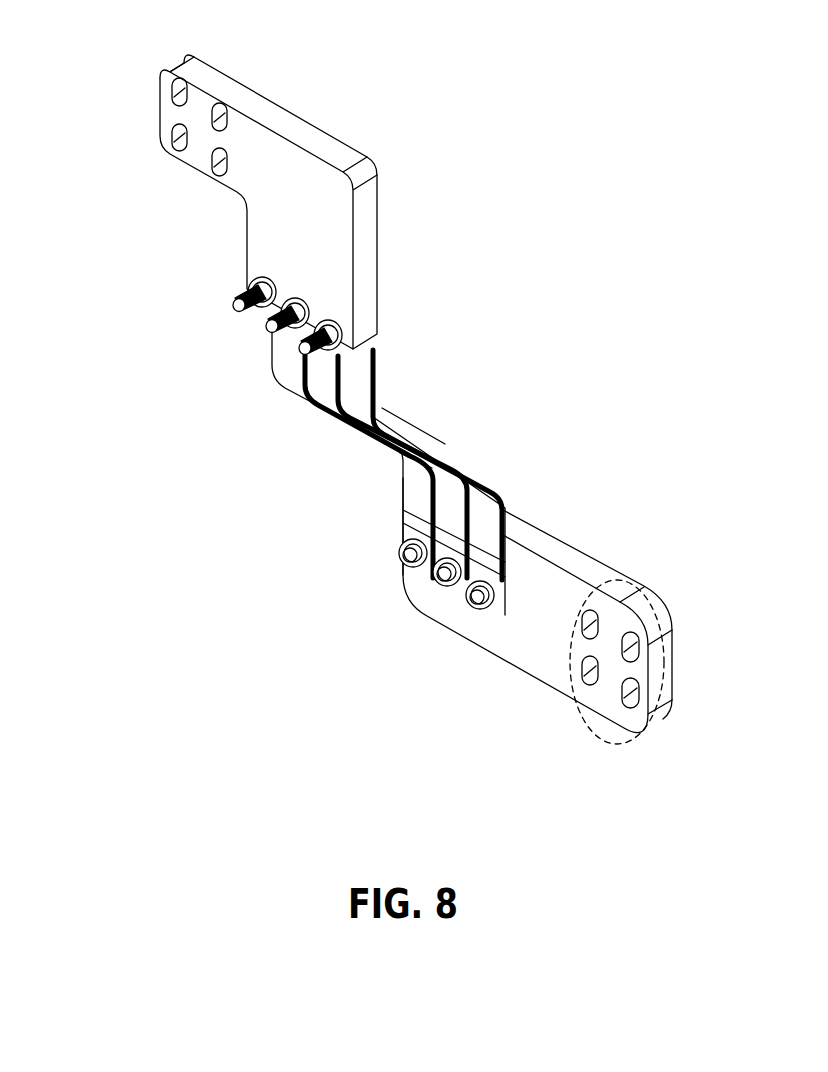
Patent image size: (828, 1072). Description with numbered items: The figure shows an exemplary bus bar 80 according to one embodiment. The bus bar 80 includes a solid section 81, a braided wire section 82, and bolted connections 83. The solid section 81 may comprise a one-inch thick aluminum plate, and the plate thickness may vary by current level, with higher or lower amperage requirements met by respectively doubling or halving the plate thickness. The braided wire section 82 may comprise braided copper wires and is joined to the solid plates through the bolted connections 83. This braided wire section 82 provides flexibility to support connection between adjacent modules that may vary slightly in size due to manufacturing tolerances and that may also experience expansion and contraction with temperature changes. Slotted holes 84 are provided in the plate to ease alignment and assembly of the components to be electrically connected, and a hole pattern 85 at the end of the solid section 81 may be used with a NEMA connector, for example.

The bus bar 80 is at (371, 415).
The solid section 81 is at (542, 545).
The braided wire section 82 is at (353, 398).
The bolted connections 83 is at (236, 310).
The slotted holes 84 is at (163, 147).
The hole pattern 85 is at (593, 738).